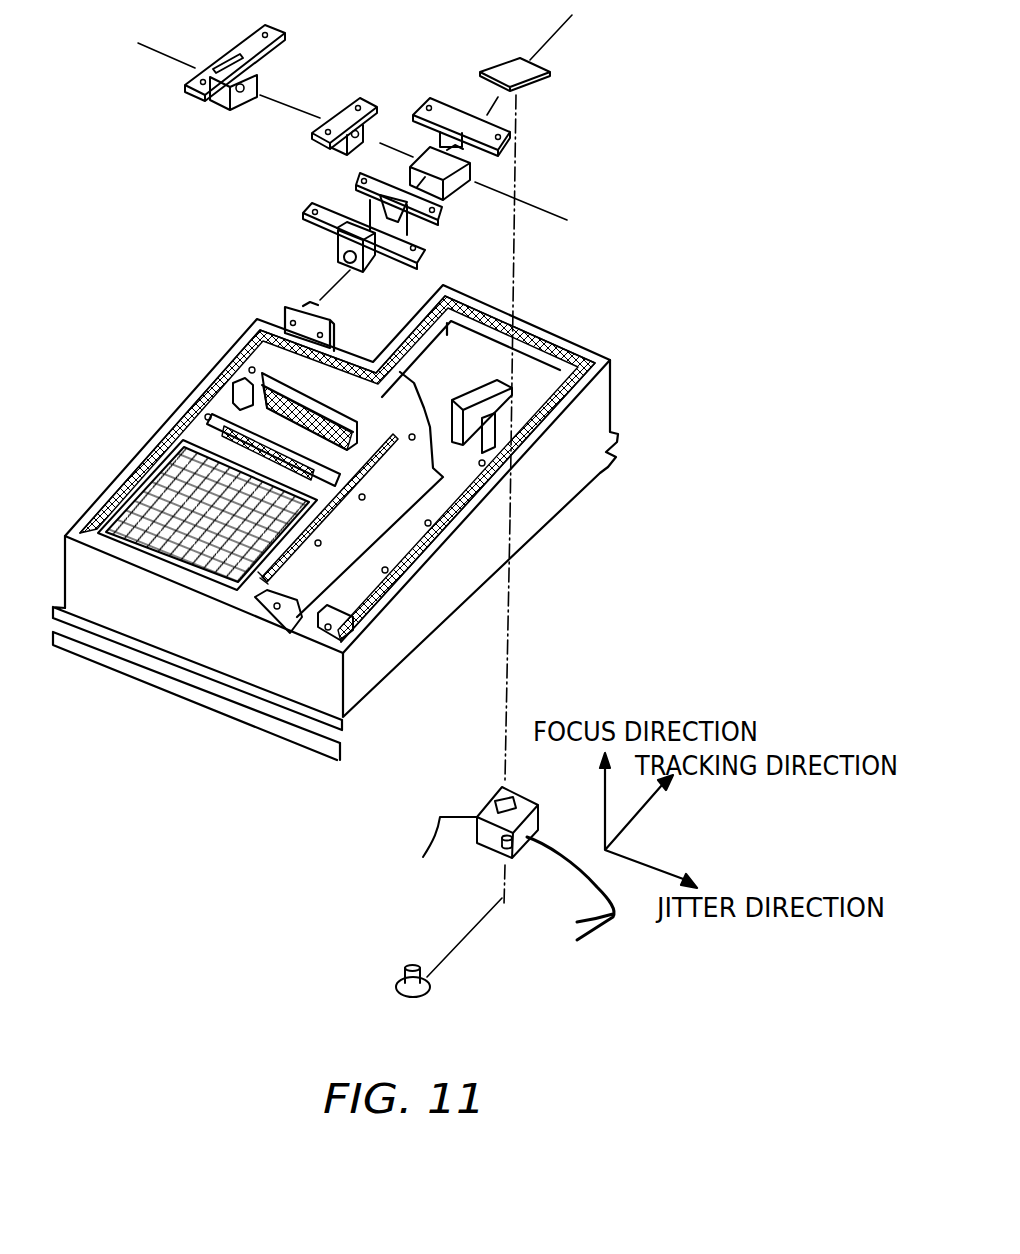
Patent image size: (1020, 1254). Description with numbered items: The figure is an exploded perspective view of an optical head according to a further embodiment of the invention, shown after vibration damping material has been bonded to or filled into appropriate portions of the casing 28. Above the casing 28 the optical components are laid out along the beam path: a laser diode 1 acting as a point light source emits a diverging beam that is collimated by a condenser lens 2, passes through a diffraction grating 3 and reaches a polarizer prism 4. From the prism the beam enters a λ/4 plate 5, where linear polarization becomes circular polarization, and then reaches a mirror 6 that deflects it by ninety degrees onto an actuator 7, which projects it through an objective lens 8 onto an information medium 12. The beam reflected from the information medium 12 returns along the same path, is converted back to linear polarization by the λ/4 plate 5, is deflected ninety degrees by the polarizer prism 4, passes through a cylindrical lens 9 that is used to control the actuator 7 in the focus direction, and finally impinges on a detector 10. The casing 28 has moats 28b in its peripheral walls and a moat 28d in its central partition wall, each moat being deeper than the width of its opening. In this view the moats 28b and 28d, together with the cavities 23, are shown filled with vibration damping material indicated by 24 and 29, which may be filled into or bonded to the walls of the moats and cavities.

The laser diode 1 is at (310, 298).
The condenser lens 2 is at (340, 257).
The diffraction grating 3 is at (363, 200).
The polarizer prism 4 is at (447, 193).
The λ/4 plate 5 is at (472, 167).
The mirror 6 is at (547, 73).
The actuator 7 is at (517, 797).
The objective lens 8 is at (520, 830).
The cylindrical lens 9 is at (370, 118).
The detector 10 is at (260, 77).
The information medium 12 is at (453, 840).
The cavities 23 is at (355, 430).
The vibration damping material 24 is at (240, 373).
The casing 28 is at (608, 360).
The moats 28b is at (183, 420).
The moat 28d is at (220, 583).
The vibration damping material 29 is at (167, 427).